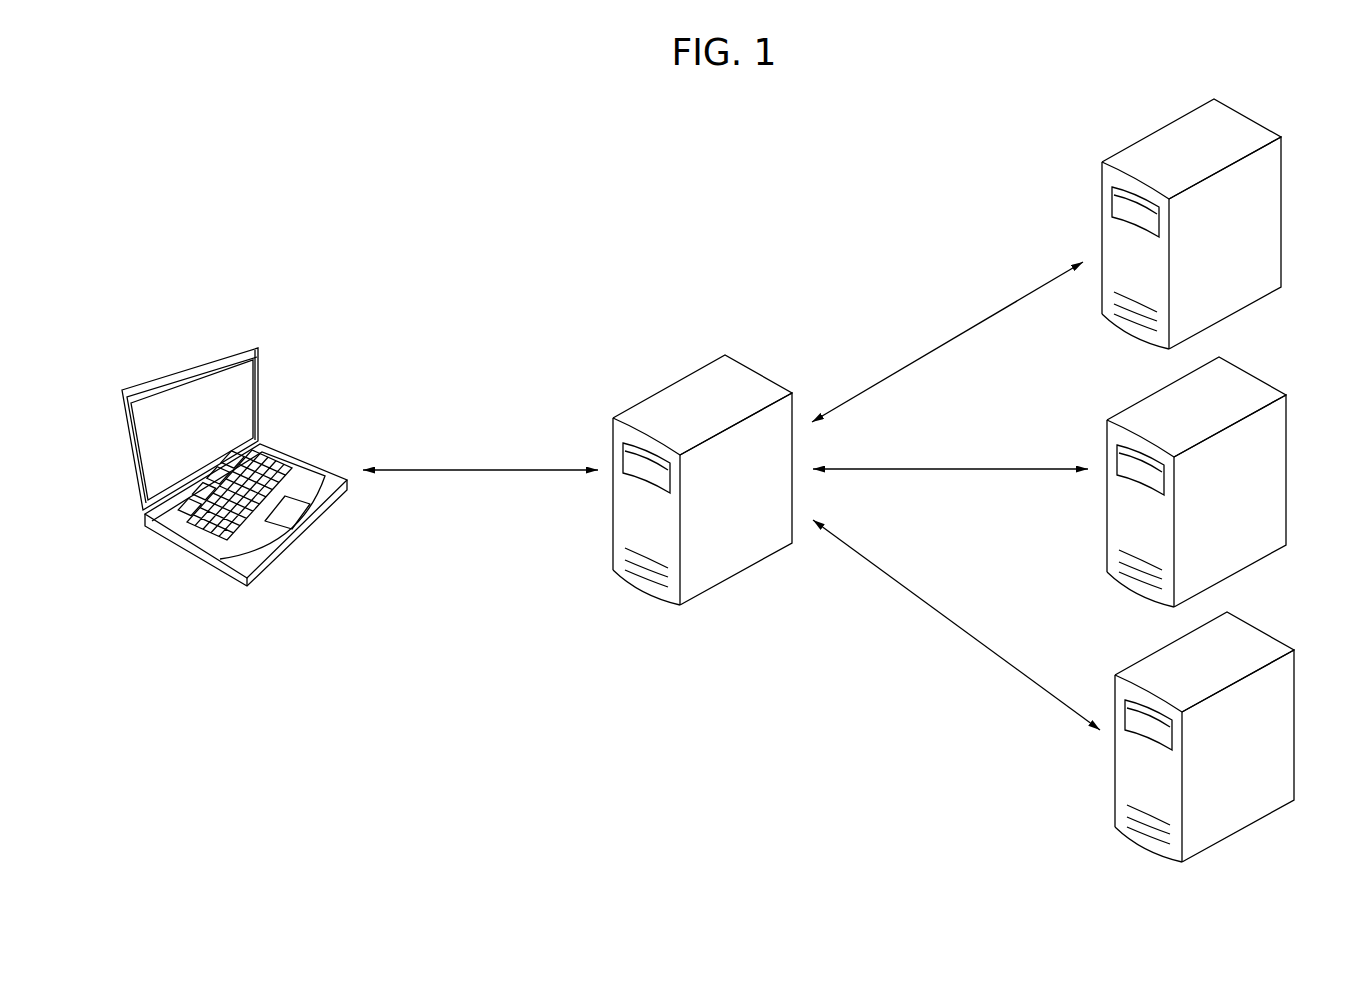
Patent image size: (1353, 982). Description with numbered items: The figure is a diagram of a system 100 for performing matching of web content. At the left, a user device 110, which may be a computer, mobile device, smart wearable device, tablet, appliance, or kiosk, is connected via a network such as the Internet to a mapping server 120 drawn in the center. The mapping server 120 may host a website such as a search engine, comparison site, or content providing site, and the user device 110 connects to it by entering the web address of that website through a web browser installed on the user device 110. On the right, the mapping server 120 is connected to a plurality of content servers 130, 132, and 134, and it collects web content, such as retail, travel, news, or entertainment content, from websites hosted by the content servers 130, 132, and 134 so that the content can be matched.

The system 100 is at (123, 186).
The user device 110 is at (192, 368).
The mapping server 120 is at (665, 388).
The content server 130 is at (1267, 187).
The content server 132 is at (1270, 447).
The content server 134 is at (1277, 700).